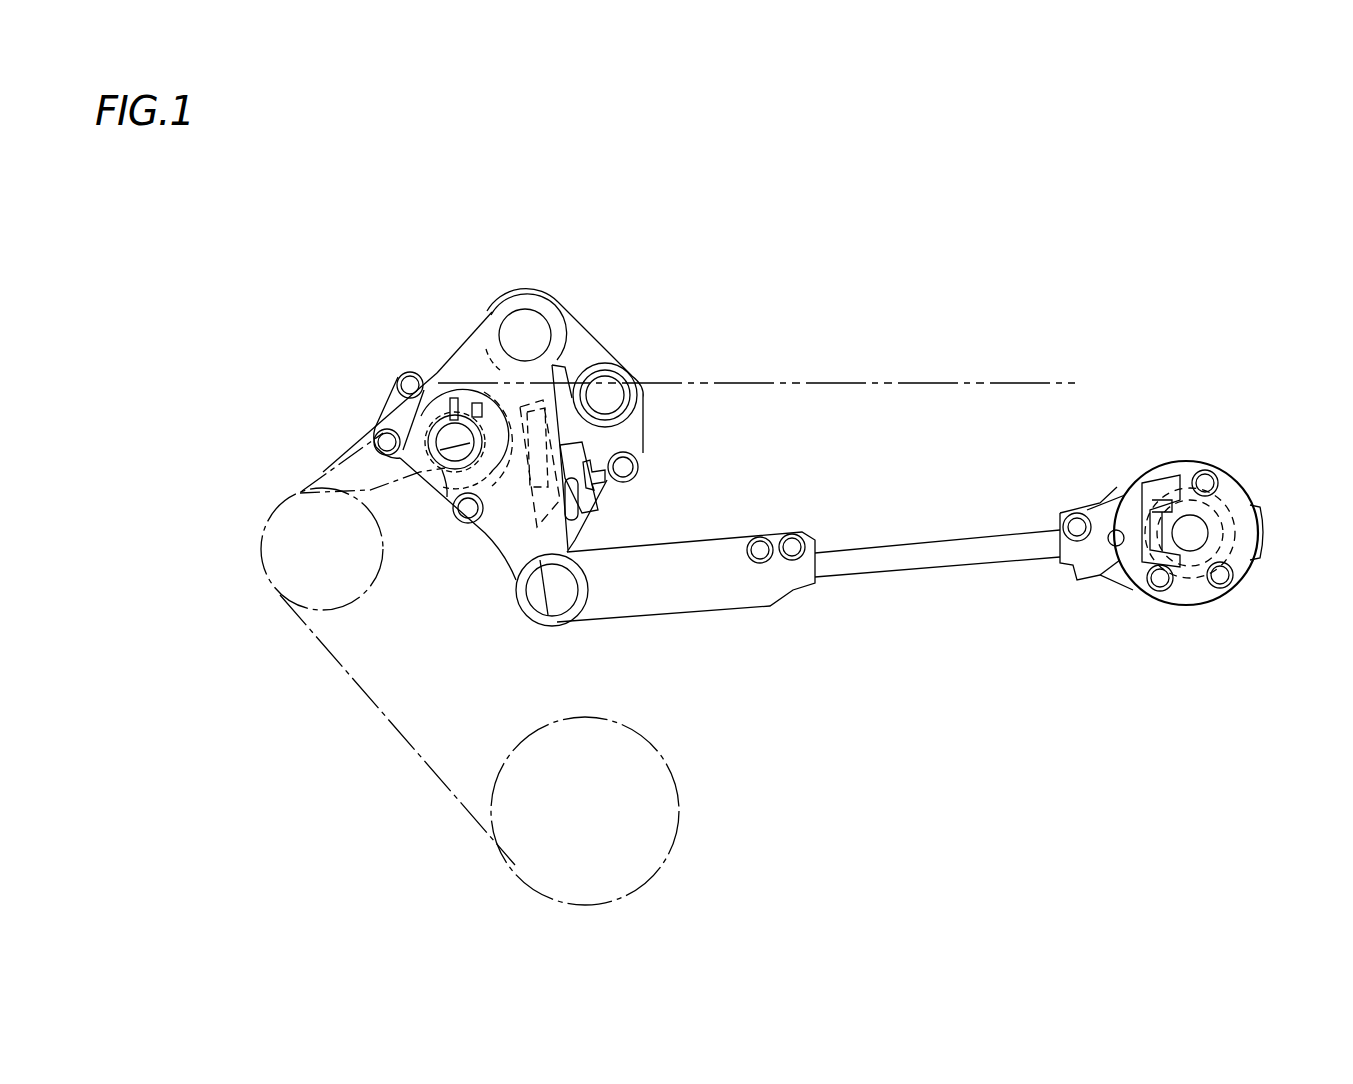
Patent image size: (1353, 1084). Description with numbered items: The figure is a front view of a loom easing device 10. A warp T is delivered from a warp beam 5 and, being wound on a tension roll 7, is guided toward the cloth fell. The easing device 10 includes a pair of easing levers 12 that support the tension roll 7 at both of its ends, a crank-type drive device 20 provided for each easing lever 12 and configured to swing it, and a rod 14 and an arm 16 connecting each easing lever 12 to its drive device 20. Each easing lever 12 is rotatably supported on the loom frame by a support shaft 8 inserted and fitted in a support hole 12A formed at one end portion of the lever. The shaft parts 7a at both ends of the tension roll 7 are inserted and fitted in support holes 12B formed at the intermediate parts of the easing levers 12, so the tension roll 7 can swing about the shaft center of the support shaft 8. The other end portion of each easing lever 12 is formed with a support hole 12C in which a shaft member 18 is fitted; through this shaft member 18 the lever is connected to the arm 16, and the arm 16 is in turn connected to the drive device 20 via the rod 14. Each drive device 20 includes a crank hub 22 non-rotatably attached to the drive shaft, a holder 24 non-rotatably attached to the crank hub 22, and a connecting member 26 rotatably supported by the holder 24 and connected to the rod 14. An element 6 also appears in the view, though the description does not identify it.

The warp beam 5 is at (677, 800).
The pulley 6 is at (383, 563).
The tension roll 7 is at (355, 483).
The shaft part 7a is at (453, 508).
The support shaft 8 is at (523, 288).
The easing device 10 is at (296, 368).
The easing lever 12 is at (465, 337).
The support hole 12A is at (522, 322).
The support hole 12B is at (442, 367).
The support hole 12C is at (565, 625).
The rod 14 is at (890, 543).
The arm 16 is at (733, 608).
The shaft member 18 is at (537, 623).
The drive device 20 is at (1110, 640).
The crank hub 22 is at (1227, 473).
The holder 24 is at (1263, 518).
The connecting member 26 is at (1097, 487).
The warp T is at (995, 383).